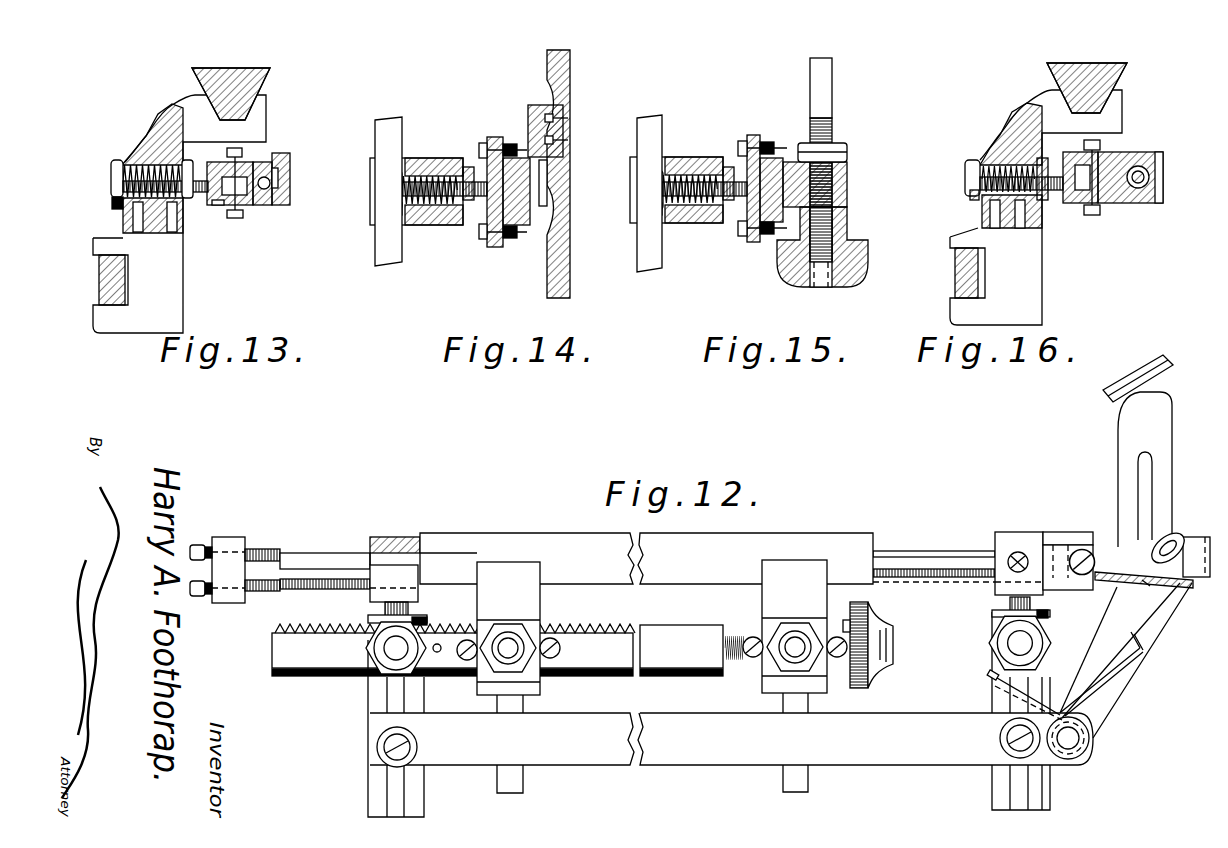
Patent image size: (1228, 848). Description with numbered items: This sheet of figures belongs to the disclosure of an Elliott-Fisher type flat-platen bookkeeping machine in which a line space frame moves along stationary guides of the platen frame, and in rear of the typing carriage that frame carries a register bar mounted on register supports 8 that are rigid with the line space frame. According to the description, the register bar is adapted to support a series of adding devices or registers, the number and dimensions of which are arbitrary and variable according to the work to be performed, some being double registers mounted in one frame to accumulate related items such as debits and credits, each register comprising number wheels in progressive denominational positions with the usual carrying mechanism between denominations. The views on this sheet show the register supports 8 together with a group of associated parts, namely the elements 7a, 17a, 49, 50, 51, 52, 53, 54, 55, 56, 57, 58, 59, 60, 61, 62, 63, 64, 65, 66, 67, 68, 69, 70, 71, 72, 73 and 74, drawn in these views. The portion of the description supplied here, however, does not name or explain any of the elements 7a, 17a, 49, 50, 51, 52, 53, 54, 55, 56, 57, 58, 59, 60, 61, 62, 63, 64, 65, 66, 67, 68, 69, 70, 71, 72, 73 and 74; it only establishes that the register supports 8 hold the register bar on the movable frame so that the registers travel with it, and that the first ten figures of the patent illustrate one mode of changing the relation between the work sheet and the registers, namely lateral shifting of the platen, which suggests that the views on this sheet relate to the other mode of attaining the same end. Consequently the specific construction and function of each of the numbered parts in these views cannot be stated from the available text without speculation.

In FIG. 13, the bar 7a is at (266, 72).
In FIG. 16, the bar 7a is at (1117, 62).
In FIG. 12, the bar 7a is at (473, 550).
In FIG. 12, the register supports 8 is at (370, 706).
In FIG. 13, the rack bar 17a is at (290, 182).
In FIG. 14, the rack bar 17a is at (571, 58).
In FIG. 15, the rack bar 17a is at (825, 80).
In FIG. 12, the rack bar 17a is at (675, 628).
In FIG. 12, the rod 49 is at (298, 560).
In FIG. 12, the block 50 is at (383, 536).
In FIG. 12, the end block 51 is at (231, 541).
In FIG. 12, the clamp plate 52 is at (1073, 540).
In FIG. 12, the screw 53 is at (1103, 550).
In FIG. 12, the screw 54 is at (1012, 555).
In FIG. 12, the loop 55 is at (1173, 537).
In FIG. 12, the connecting piece 56 is at (1176, 576).
In FIG. 12, the block 57 is at (1193, 537).
In FIG. 12, the link 58 is at (1145, 627).
In FIG. 12, the tip plate 59 is at (1170, 360).
In FIG. 12, the pivot 60 is at (1090, 743).
In FIG. 13, the bar 61 is at (99, 282).
In FIG. 14, the bar 61 is at (383, 251).
In FIG. 15, the bar 61 is at (645, 252).
In FIG. 16, the bar 61 is at (960, 267).
In FIG. 12, the bar 61 is at (930, 725).
In FIG. 12, the rod 62 is at (1100, 685).
In FIG. 12, the slotted arm 63 is at (1150, 462).
In FIG. 12, the link 64 is at (1110, 588).
In FIG. 12, the pin 65 is at (1142, 588).
In FIG. 13, the clamp bracket 66 is at (174, 112).
In FIG. 14, the clamp bracket 66 is at (408, 156).
In FIG. 15, the clamp bracket 66 is at (677, 157).
In FIG. 16, the clamp bracket 66 is at (1028, 108).
In FIG. 12, the clamp bracket 66 is at (540, 688).
In FIG. 13, the disc 67 is at (216, 208).
In FIG. 14, the disc 67 is at (523, 240).
In FIG. 15, the disc 67 is at (783, 157).
In FIG. 16, the disc 67 is at (1073, 204).
In FIG. 12, the disc 67 is at (467, 638).
In FIG. 13, the spring 68 is at (137, 172).
In FIG. 14, the spring 68 is at (430, 170).
In FIG. 15, the spring 68 is at (700, 158).
In FIG. 16, the spring 68 is at (992, 165).
In FIG. 12, the spring 68 is at (509, 642).
In FIG. 13, the bolt head 69 is at (111, 203).
In FIG. 14, the bolt head 69 is at (392, 205).
In FIG. 15, the bolt head 69 is at (653, 195).
In FIG. 16, the bolt head 69 is at (968, 161).
In FIG. 12, the bolt head 69 is at (530, 628).
In FIG. 13, the block 70 is at (255, 162).
In FIG. 14, the block 70 is at (530, 140).
In FIG. 15, the block 70 is at (772, 238).
In FIG. 16, the block 70 is at (1121, 203).
In FIG. 13, the pin 71 is at (263, 198).
In FIG. 14, the pin 71 is at (563, 172).
In FIG. 15, the screw 72 is at (833, 191).
In FIG. 16, the screw 72 is at (1147, 156).
In FIG. 12, the screw 72 is at (733, 637).
In FIG. 15, the knob 73 is at (857, 268).
In FIG. 12, the knob 73 is at (873, 609).
In FIG. 15, the nut 74 is at (848, 151).